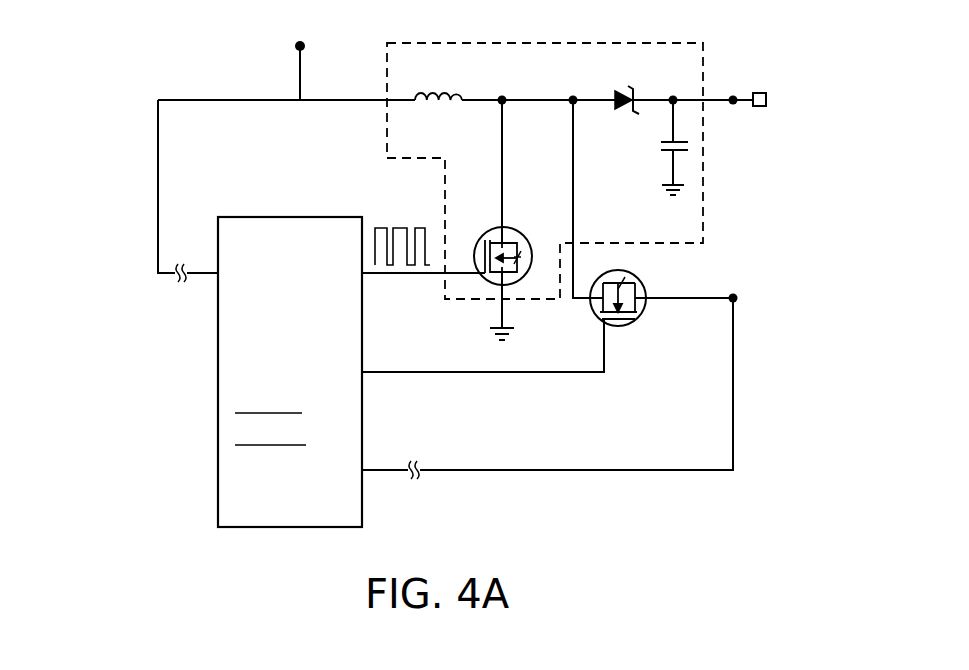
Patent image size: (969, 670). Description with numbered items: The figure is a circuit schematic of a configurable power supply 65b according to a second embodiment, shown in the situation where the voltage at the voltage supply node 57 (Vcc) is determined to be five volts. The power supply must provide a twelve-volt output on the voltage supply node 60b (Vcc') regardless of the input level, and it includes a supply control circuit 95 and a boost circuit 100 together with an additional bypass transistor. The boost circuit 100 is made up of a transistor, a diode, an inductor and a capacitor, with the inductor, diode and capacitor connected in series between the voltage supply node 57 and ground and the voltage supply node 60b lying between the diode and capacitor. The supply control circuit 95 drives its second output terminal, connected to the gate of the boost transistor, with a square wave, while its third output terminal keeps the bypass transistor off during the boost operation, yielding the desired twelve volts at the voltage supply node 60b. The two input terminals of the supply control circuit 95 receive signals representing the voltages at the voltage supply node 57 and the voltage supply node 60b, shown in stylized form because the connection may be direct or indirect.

The voltage supply node 57 is at (305, 48).
The supply control circuit 95 is at (300, 217).
The boost circuit 100 is at (645, 43).
The voltage supply node 60b is at (767, 100).
The configurable power supply 65b is at (137, 530).